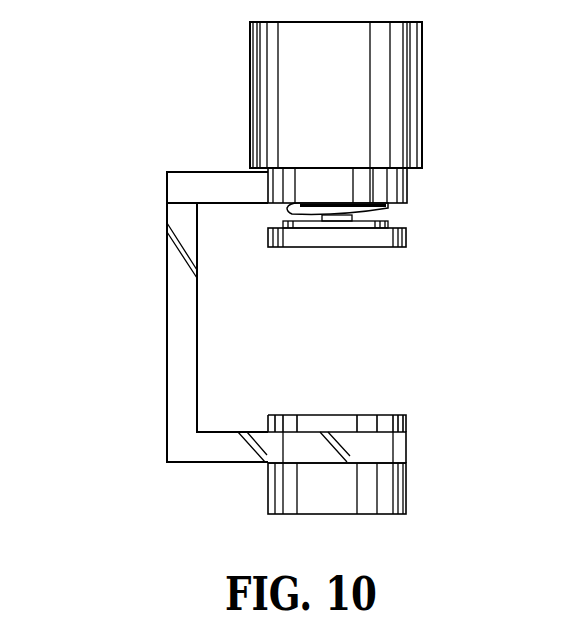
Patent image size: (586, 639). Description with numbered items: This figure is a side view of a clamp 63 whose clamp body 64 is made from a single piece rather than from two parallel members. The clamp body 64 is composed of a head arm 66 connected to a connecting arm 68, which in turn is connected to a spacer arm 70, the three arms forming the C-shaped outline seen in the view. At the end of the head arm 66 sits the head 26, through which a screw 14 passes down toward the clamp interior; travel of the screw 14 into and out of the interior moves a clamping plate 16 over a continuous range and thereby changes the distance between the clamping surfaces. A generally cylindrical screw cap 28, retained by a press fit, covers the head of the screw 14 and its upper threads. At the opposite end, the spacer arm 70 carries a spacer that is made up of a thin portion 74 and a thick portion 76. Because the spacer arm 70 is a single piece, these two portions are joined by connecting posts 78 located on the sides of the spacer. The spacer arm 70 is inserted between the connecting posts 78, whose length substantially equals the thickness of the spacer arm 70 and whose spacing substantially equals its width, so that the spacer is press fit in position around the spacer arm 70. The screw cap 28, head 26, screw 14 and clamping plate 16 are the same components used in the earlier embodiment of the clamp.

The clamp 63 is at (162, 77).
The clamp body 64 is at (134, 259).
The head arm 66 is at (205, 172).
The connecting arm 68 is at (167, 342).
The spacer arm 70 is at (213, 465).
The screw cap 28 is at (422, 82).
The head 26 is at (407, 183).
The screw 14 is at (388, 207).
The clamping plate 16 is at (405, 237).
The thin portion 74 is at (367, 415).
The connecting posts 78 is at (382, 445).
The thick portion 76 is at (408, 487).